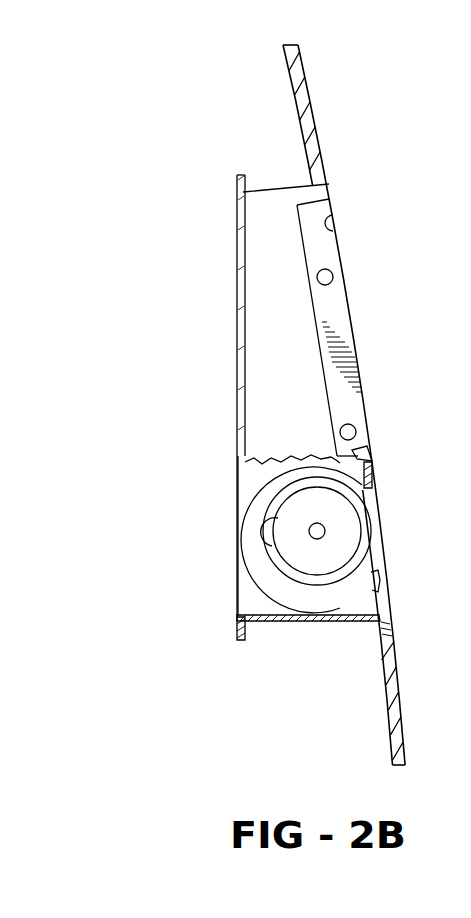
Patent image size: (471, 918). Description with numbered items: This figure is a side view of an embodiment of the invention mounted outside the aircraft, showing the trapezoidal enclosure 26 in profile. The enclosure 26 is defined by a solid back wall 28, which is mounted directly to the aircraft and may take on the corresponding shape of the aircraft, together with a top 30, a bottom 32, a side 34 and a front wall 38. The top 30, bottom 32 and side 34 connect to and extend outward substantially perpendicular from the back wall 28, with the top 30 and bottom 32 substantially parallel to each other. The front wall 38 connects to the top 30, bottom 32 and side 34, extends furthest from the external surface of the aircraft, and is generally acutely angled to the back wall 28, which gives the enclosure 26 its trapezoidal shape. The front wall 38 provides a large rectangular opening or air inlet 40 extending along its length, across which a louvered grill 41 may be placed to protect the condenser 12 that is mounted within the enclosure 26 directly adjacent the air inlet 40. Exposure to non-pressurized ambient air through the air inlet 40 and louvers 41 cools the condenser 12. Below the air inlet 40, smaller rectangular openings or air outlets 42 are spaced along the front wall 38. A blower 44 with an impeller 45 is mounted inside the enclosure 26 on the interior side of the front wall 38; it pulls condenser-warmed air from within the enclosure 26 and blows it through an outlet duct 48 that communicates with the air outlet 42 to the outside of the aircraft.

The condenser 12 is at (343, 325).
The enclosure 26 is at (253, 647).
The back wall 28 is at (238, 605).
The top 30 is at (286, 186).
The bottom 32 is at (312, 620).
The side 34 is at (302, 370).
The front wall 38 is at (352, 451).
The air inlet 40 is at (336, 232).
The louvered grill 41 is at (360, 357).
The air outlet 42 is at (383, 597).
The blower 44 is at (348, 531).
The impeller 45 is at (278, 532).
The outlet duct 48 is at (347, 605).